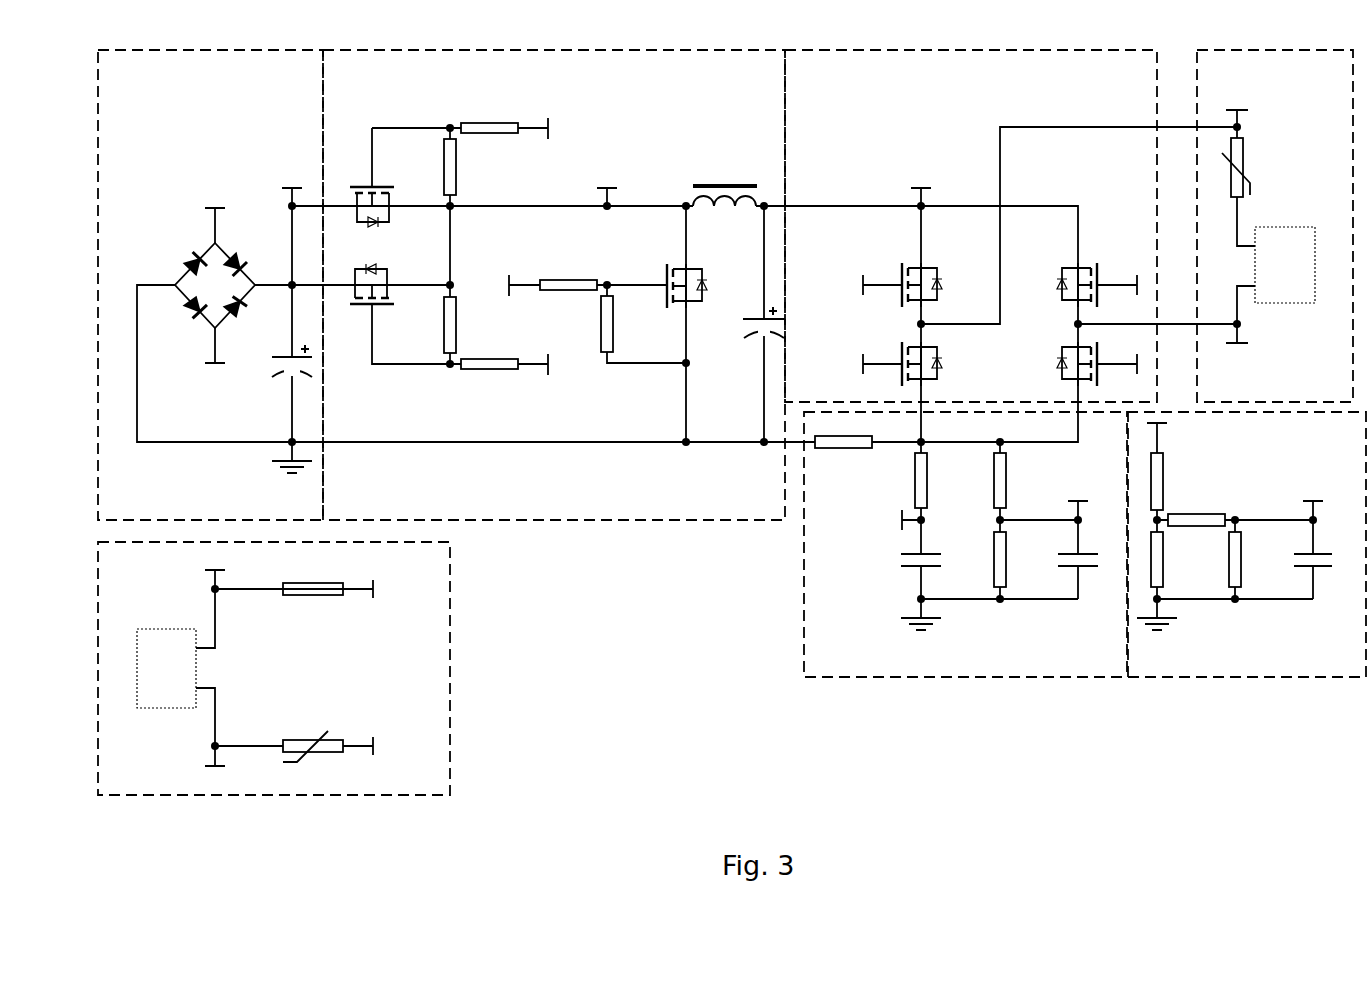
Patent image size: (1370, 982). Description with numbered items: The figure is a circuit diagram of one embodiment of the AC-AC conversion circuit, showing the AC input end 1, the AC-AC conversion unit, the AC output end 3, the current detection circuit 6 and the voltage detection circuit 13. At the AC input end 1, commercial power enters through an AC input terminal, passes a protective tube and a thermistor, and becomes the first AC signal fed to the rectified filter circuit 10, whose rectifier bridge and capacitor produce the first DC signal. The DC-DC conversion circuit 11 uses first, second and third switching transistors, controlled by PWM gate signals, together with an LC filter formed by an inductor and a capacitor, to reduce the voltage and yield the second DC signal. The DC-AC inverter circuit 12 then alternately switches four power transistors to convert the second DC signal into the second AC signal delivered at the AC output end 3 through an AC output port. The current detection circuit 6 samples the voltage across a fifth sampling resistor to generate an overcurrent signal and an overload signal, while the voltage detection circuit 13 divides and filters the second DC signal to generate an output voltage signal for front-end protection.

The AC input end 1 is at (274, 668).
The AC output end 3 is at (1275, 226).
The current detection circuit 6 is at (967, 544).
The rectified filter circuit 10 is at (456, 285).
The DC-DC conversion circuit 11 is at (554, 285).
The DC-AC inverter circuit 12 is at (1011, 248).
The voltage detection circuit 13 is at (1248, 545).